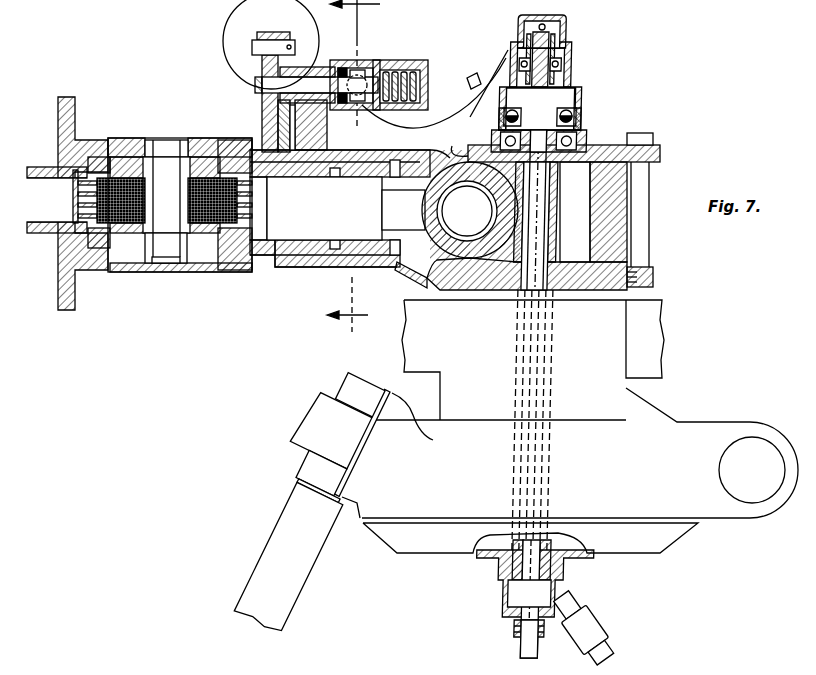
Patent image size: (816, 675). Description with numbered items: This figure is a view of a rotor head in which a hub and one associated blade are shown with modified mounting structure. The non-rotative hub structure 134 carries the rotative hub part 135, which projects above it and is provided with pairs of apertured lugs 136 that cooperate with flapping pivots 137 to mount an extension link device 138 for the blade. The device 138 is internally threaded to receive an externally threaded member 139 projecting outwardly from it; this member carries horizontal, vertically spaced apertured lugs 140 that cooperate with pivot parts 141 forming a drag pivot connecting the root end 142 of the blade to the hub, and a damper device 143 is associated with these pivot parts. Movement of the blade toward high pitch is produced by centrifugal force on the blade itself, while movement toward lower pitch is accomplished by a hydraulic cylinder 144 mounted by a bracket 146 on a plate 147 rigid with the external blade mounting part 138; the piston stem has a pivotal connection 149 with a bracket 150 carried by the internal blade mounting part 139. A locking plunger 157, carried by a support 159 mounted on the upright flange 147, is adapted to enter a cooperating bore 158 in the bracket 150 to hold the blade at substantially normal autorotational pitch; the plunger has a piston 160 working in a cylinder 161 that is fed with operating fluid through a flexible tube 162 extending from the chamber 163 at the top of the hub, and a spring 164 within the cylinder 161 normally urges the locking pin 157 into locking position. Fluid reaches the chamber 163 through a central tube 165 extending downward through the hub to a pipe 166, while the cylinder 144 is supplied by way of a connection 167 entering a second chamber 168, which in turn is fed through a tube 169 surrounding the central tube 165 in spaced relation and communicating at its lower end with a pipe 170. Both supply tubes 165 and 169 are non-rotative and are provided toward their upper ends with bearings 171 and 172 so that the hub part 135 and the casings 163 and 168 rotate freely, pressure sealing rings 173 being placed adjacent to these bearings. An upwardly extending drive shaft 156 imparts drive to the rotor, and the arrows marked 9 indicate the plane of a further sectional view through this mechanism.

The section line 9- 9 is at (359, 166).
The non-rotative hub structure 134 is at (598, 388).
The rotative hub part 135 is at (566, 278).
The apertured lugs 136 is at (541, 208).
The flapping pivots 137 is at (468, 227).
The extension link device 138 is at (398, 150).
The externally threaded member 139 is at (280, 262).
The apertured lugs 140 is at (212, 140).
The pivot parts 141 is at (127, 136).
The root end of the blade 142 is at (44, 232).
The damper device 143 is at (98, 262).
The hydraulic cylinder 144 is at (232, 17).
The bracket 146 is at (262, 104).
The plate 147 is at (288, 153).
The pivotal connection 149 is at (267, 38).
The bracket 150 is at (278, 118).
The drive shaft 156 is at (278, 541).
The locking plunger 157 is at (318, 77).
The bore 158 is at (258, 95).
The support 159 is at (297, 72).
The piston 160 is at (398, 60).
The cylinder 161 is at (393, 60).
The flexible tube 162 is at (456, 110).
The chamber 163 is at (566, 33).
The spring 164 is at (400, 60).
The central tube 165 is at (550, 100).
The pipe 166 is at (536, 652).
The connection 167 is at (497, 93).
The chamber 168 is at (565, 110).
The tube 169 is at (550, 210).
The pipe 170 is at (607, 648).
The bearing 171 is at (518, 64).
The bearing 172 is at (588, 133).
The pressure sealing rings 173 is at (585, 116).